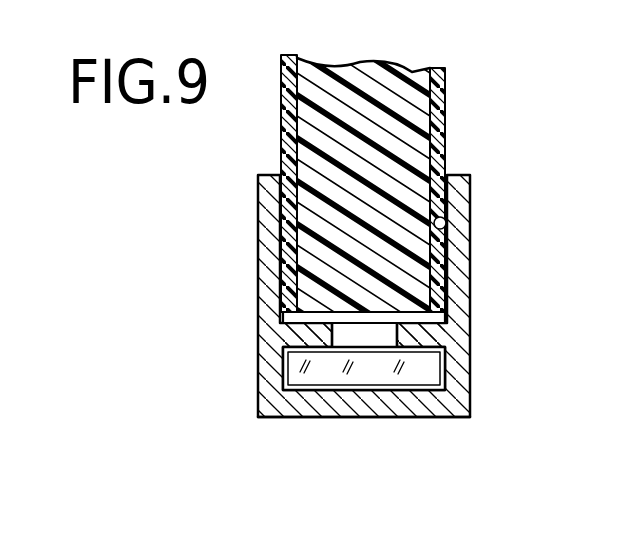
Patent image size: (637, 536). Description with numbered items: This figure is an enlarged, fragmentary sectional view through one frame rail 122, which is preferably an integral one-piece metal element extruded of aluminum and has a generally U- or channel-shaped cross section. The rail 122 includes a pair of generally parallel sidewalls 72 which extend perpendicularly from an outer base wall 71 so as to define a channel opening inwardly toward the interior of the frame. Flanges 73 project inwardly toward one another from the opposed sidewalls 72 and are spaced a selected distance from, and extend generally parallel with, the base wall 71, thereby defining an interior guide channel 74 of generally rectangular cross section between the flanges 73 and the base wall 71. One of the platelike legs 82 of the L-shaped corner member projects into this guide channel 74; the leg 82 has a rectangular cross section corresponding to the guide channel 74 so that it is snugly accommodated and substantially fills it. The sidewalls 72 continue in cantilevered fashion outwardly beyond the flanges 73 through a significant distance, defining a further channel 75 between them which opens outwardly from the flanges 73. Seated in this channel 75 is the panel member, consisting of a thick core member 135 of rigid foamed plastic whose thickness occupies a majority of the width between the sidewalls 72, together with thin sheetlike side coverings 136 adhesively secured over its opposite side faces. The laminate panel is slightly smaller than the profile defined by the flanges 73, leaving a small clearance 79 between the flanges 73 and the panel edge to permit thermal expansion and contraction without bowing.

The core member 135 is at (360, 87).
The side coverings 136 is at (280, 108).
The channel 75 is at (446, 228).
The sidewalls 72 is at (267, 288).
The clearance 79 is at (425, 316).
The guide channel 74 is at (441, 375).
The flanges 73 is at (322, 340).
The platelike legs 82 is at (368, 375).
The base wall 71 is at (395, 407).
The rail 122 is at (258, 348).